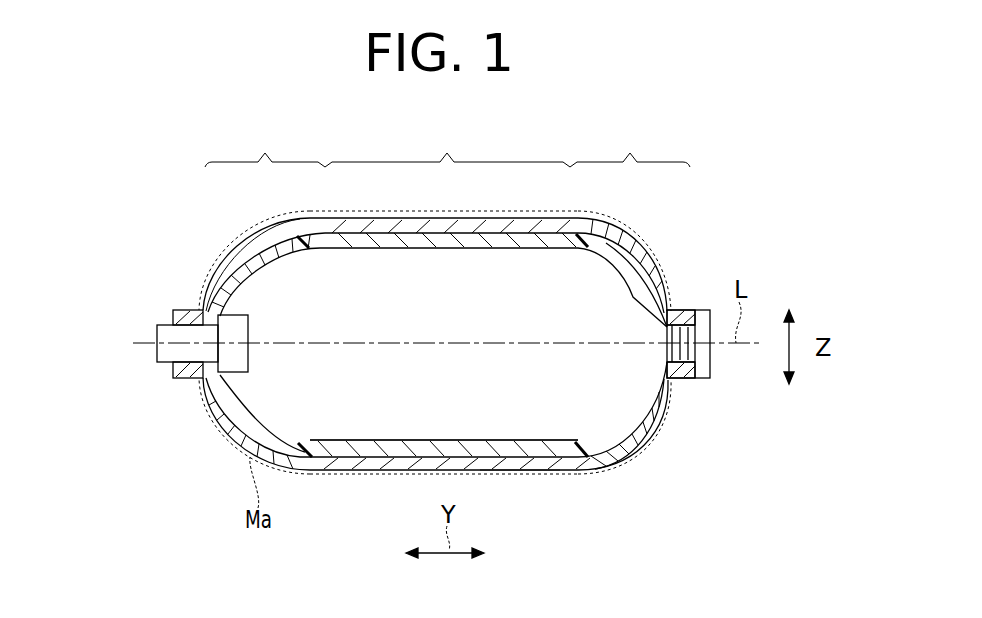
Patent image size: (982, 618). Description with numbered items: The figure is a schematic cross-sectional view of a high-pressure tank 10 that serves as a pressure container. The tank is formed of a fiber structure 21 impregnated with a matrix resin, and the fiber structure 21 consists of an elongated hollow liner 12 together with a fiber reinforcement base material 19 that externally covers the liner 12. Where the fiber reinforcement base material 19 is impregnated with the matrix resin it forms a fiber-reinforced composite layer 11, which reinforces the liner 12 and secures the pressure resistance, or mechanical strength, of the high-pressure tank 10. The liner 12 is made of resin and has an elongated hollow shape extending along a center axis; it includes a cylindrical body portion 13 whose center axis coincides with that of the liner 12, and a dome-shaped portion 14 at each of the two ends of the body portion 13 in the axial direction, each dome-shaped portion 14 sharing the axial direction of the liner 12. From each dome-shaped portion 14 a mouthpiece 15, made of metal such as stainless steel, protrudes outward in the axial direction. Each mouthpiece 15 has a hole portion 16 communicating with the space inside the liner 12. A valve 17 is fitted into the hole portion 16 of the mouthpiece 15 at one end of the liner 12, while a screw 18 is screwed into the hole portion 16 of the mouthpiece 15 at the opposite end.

The high-pressure tank 10 is at (721, 208).
The fiber-reinforced composite layer 11 is at (640, 441).
The liner 12 is at (679, 236).
The body portion 13 is at (451, 144).
The dome-shaped portion 14 is at (447, 144).
The mouthpiece 15 is at (194, 313).
The hole portion 16 is at (190, 376).
The valve 17 is at (156, 345).
The screw 18 is at (710, 367).
The fiber reinforcement base material 19 is at (564, 460).
The fiber structure 21 is at (516, 486).